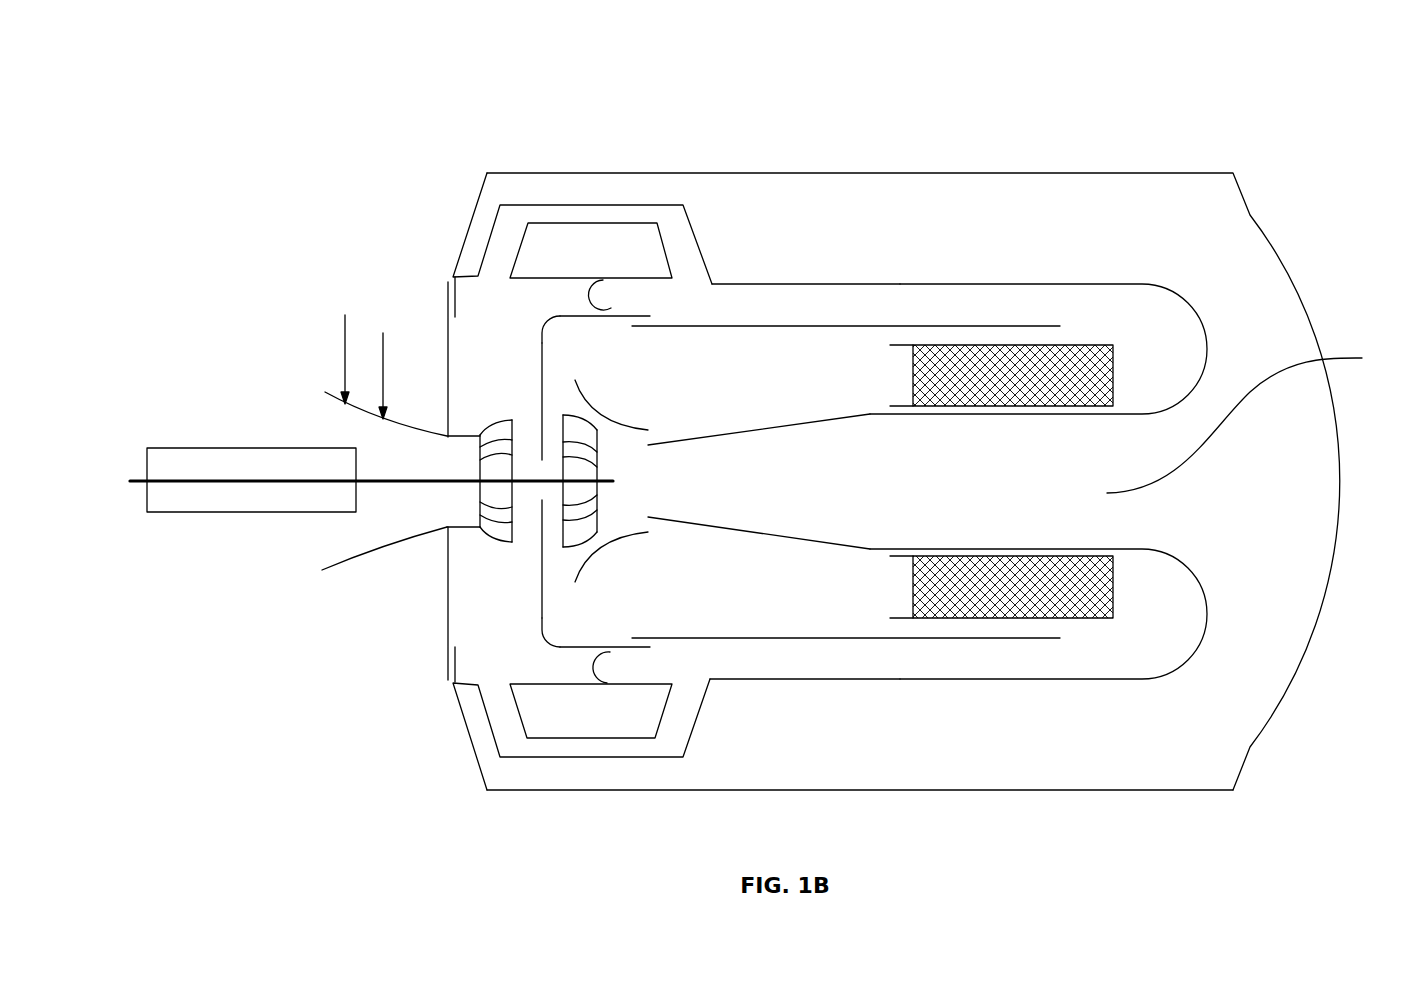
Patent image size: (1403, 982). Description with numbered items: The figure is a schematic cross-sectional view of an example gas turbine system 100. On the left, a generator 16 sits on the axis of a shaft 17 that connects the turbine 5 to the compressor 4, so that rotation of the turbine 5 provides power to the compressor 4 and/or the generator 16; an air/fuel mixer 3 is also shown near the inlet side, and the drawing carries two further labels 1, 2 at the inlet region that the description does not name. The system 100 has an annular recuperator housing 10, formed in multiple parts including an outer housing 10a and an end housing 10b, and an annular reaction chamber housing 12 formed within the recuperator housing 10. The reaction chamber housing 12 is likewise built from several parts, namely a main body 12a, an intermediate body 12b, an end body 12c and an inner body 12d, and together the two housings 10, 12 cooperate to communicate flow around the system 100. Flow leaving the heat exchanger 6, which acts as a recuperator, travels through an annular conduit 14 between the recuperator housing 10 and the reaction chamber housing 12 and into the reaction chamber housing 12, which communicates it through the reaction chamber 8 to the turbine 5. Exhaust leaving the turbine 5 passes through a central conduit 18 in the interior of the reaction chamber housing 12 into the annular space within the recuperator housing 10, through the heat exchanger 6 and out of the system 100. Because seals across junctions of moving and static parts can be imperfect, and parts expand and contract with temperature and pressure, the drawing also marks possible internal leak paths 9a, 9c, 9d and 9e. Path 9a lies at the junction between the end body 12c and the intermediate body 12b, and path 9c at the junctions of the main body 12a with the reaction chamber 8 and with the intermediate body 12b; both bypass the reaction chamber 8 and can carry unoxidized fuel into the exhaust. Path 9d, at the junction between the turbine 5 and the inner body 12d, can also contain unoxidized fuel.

The gas turbine system 100 is at (270, 84).
The ion source 1 is at (352, 555).
The gas inlet flow 2 is at (345, 350).
The air/fuel mixer 3 is at (392, 528).
The compressor 4 is at (498, 532).
The turbine 5 is at (581, 538).
The heat exchanger 6 is at (602, 713).
The reaction chamber 8 is at (1012, 613).
The internal leak path 9a is at (544, 343).
The internal leak path 9c is at (1072, 345).
The internal leak path 9d is at (700, 403).
The internal leak path 9e is at (527, 430).
The recuperator housing 10 is at (966, 166).
The outer housing 10a is at (1147, 173).
The end housing 10b is at (446, 310).
The reaction chamber housing 12 is at (750, 316).
The main body 12a is at (810, 325).
The intermediate body 12b is at (568, 315).
The end body 12c is at (540, 378).
The inner body 12d is at (780, 428).
The annular conduit 14 is at (893, 300).
The generator 16 is at (255, 446).
The shaft 17 is at (530, 513).
The central conduit 18 is at (1252, 421).